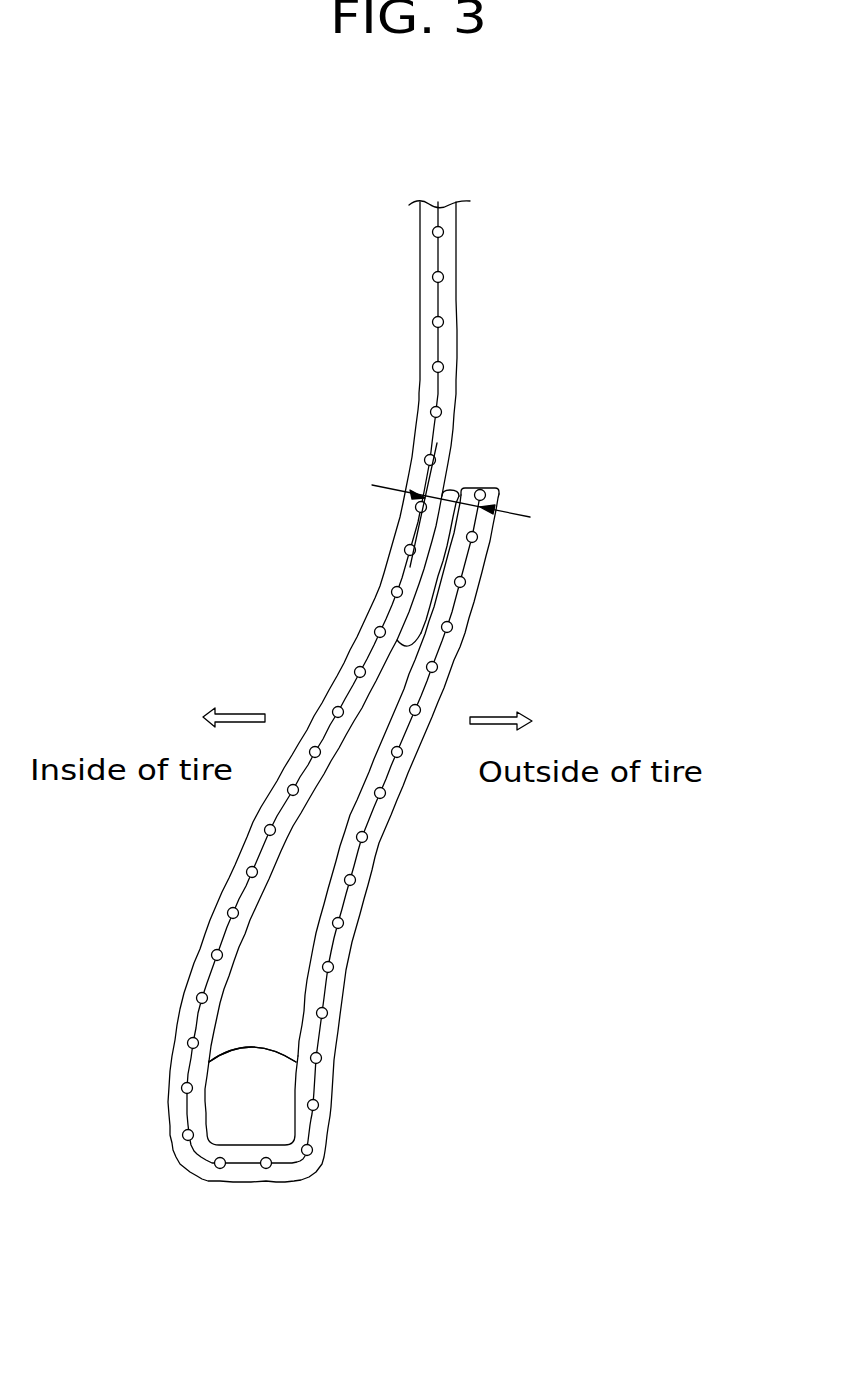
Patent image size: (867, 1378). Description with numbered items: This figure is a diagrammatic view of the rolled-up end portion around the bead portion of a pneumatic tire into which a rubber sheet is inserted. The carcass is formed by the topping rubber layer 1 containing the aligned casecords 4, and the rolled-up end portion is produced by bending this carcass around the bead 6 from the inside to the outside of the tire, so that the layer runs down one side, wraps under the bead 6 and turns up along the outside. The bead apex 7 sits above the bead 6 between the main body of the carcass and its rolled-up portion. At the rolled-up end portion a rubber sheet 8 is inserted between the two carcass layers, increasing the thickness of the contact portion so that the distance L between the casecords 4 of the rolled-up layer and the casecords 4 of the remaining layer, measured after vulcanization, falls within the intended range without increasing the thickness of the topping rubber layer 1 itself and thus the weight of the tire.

The topping rubber layer 1 is at (425, 297).
The casecords 4 is at (444, 367).
The bead 6 is at (260, 1115).
The bead apex 7 is at (268, 1002).
The rubber sheet 8 is at (433, 567).
The distance between the aligned casecords L is at (460, 490).